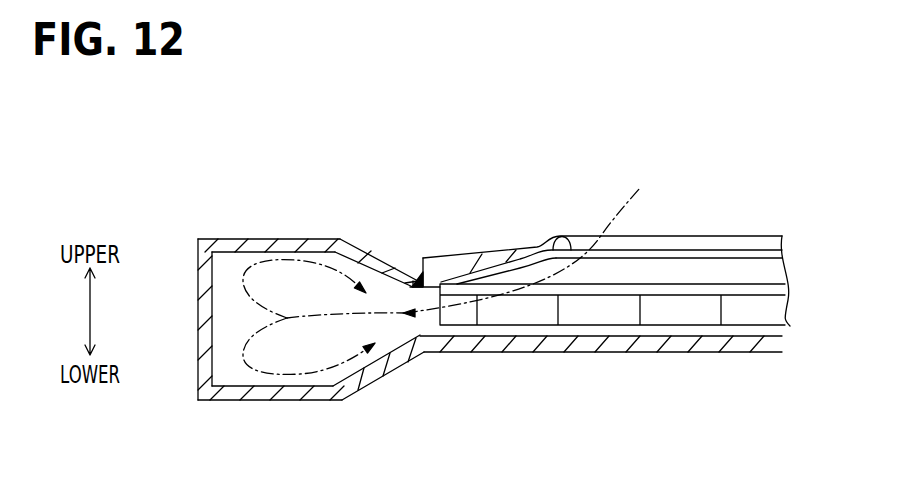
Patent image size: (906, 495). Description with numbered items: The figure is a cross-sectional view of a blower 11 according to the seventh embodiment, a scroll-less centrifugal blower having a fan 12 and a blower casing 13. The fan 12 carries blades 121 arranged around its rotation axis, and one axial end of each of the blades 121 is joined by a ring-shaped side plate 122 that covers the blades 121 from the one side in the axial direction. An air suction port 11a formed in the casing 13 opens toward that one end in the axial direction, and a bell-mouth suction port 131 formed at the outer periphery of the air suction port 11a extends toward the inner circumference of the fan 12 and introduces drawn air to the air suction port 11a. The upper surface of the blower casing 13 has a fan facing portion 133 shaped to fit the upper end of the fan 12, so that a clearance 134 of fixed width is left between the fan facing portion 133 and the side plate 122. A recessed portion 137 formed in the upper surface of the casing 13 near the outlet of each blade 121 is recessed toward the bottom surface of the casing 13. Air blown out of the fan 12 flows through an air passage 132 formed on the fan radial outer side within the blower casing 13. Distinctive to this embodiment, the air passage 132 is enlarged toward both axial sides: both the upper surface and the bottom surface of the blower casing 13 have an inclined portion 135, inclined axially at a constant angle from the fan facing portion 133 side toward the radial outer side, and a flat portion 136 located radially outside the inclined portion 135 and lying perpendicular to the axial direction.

The blower 11 is at (212, 200).
The air suction port 11a is at (680, 243).
The fan 12 is at (690, 327).
The blower casing 13 is at (190, 330).
The blades 121 is at (590, 310).
The side plate 122 is at (707, 275).
The suction port 131 is at (575, 237).
The air passage 132 is at (232, 318).
The fan facing portion 133 is at (512, 250).
The clearance 134 is at (470, 272).
The inclined portion 135 is at (372, 256).
The flat portion 136 is at (289, 239).
The recessed portion 137 is at (424, 260).